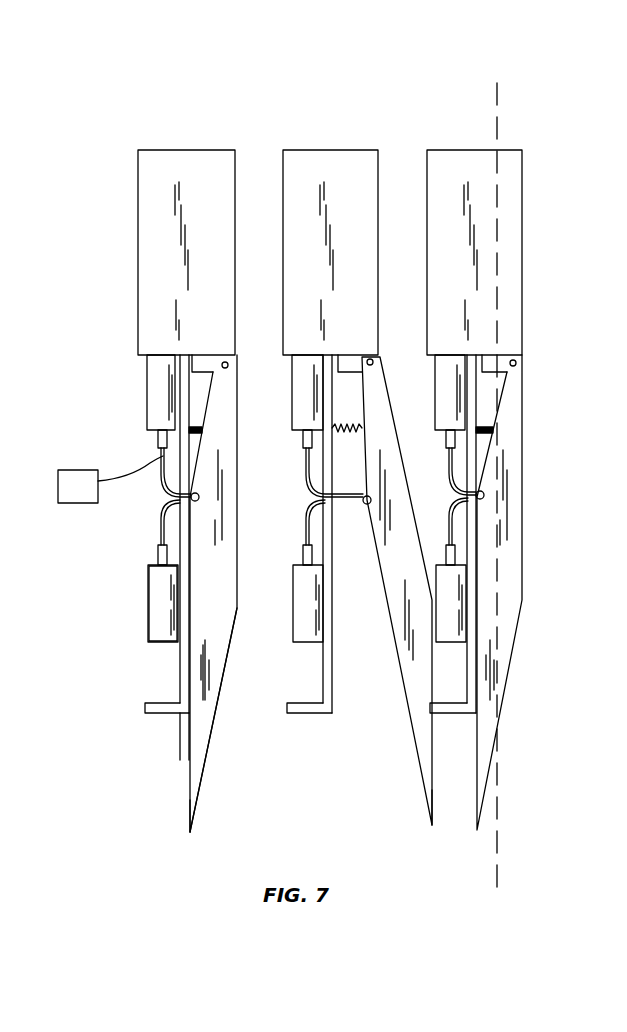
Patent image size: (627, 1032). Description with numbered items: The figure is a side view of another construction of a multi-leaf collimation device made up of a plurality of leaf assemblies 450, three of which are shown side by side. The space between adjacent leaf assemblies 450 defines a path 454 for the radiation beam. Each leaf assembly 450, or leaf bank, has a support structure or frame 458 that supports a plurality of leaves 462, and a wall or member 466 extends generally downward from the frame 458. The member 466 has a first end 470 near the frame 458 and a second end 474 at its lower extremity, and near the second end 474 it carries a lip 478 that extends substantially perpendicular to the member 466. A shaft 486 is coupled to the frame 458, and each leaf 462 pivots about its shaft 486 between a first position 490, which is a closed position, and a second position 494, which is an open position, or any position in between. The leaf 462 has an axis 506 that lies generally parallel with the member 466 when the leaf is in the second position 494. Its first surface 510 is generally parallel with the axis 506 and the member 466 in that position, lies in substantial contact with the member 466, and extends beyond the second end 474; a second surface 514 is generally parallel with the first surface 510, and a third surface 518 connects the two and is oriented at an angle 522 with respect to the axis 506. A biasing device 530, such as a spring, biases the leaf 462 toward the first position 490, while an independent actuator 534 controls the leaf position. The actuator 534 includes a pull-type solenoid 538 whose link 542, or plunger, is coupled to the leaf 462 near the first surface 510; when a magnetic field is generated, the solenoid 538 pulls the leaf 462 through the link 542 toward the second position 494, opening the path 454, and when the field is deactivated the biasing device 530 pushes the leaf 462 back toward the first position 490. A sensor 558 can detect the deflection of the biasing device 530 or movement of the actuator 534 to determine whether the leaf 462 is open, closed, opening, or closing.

The leaf assembly 450 is at (327, 107).
The path 454 is at (402, 155).
The frame 458 is at (178, 157).
The leaf 462 is at (217, 660).
The member 466 is at (178, 662).
The first end 470 is at (130, 378).
The second end 474 is at (177, 740).
The lip 478 is at (148, 707).
The shaft 486 is at (518, 363).
The first position 490 is at (427, 848).
The second position 494 is at (190, 857).
The axis 506 is at (500, 92).
The first surface 510 is at (395, 660).
The second surface 514 is at (238, 522).
The third surface 518 is at (210, 742).
The angle 522 is at (508, 650).
The biasing device 530 is at (352, 428).
The actuator 534 is at (152, 575).
The pull-type solenoid 538 is at (157, 602).
The link 542 is at (305, 462).
The sensor 558 is at (70, 505).